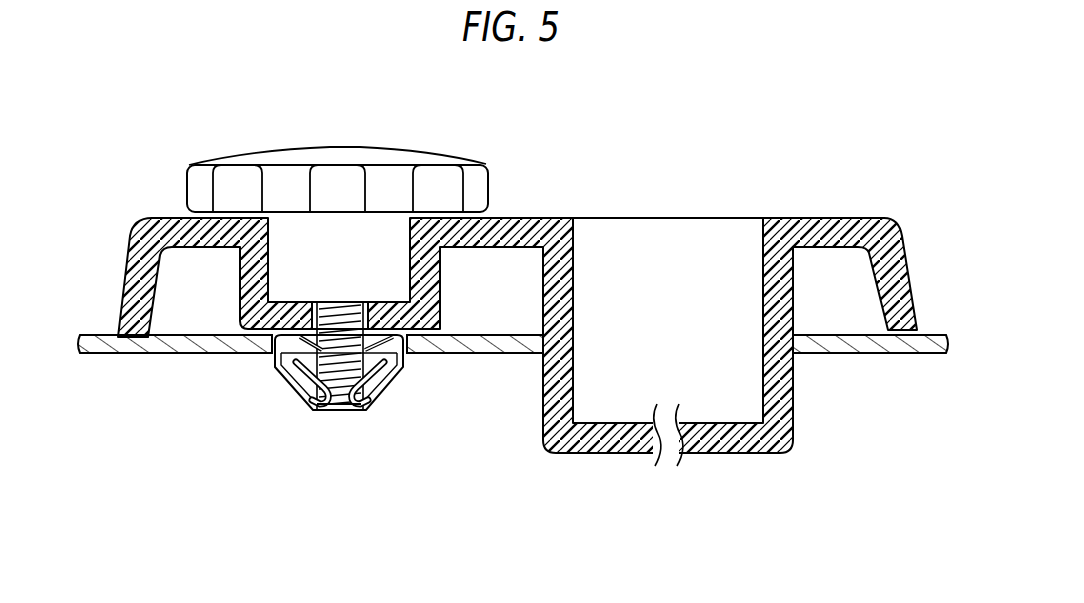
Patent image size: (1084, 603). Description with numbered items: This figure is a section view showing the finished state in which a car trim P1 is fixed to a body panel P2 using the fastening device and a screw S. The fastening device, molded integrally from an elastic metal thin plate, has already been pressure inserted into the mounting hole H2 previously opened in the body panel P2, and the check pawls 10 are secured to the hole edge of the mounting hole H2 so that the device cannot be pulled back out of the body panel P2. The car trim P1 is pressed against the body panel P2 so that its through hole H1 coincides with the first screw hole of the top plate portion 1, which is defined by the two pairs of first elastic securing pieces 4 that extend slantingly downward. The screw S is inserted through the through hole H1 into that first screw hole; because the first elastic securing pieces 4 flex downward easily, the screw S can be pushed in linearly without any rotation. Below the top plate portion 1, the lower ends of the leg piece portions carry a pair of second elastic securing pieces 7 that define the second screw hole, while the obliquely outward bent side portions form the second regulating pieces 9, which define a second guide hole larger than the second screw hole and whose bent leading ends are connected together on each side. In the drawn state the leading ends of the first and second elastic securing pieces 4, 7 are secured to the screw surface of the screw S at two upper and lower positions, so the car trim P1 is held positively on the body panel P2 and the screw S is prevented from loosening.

The top plate portion 1 is at (282, 387).
The first elastic securing pieces 4 is at (303, 330).
The second elastic securing pieces 7 is at (322, 421).
The second regulating pieces 9 is at (298, 377).
The check pawls 10 is at (269, 360).
The through hole H1 is at (437, 311).
The mounting hole H2 is at (268, 343).
The car trim P1 is at (512, 218).
The body panel P2 is at (511, 355).
The screw S is at (343, 413).